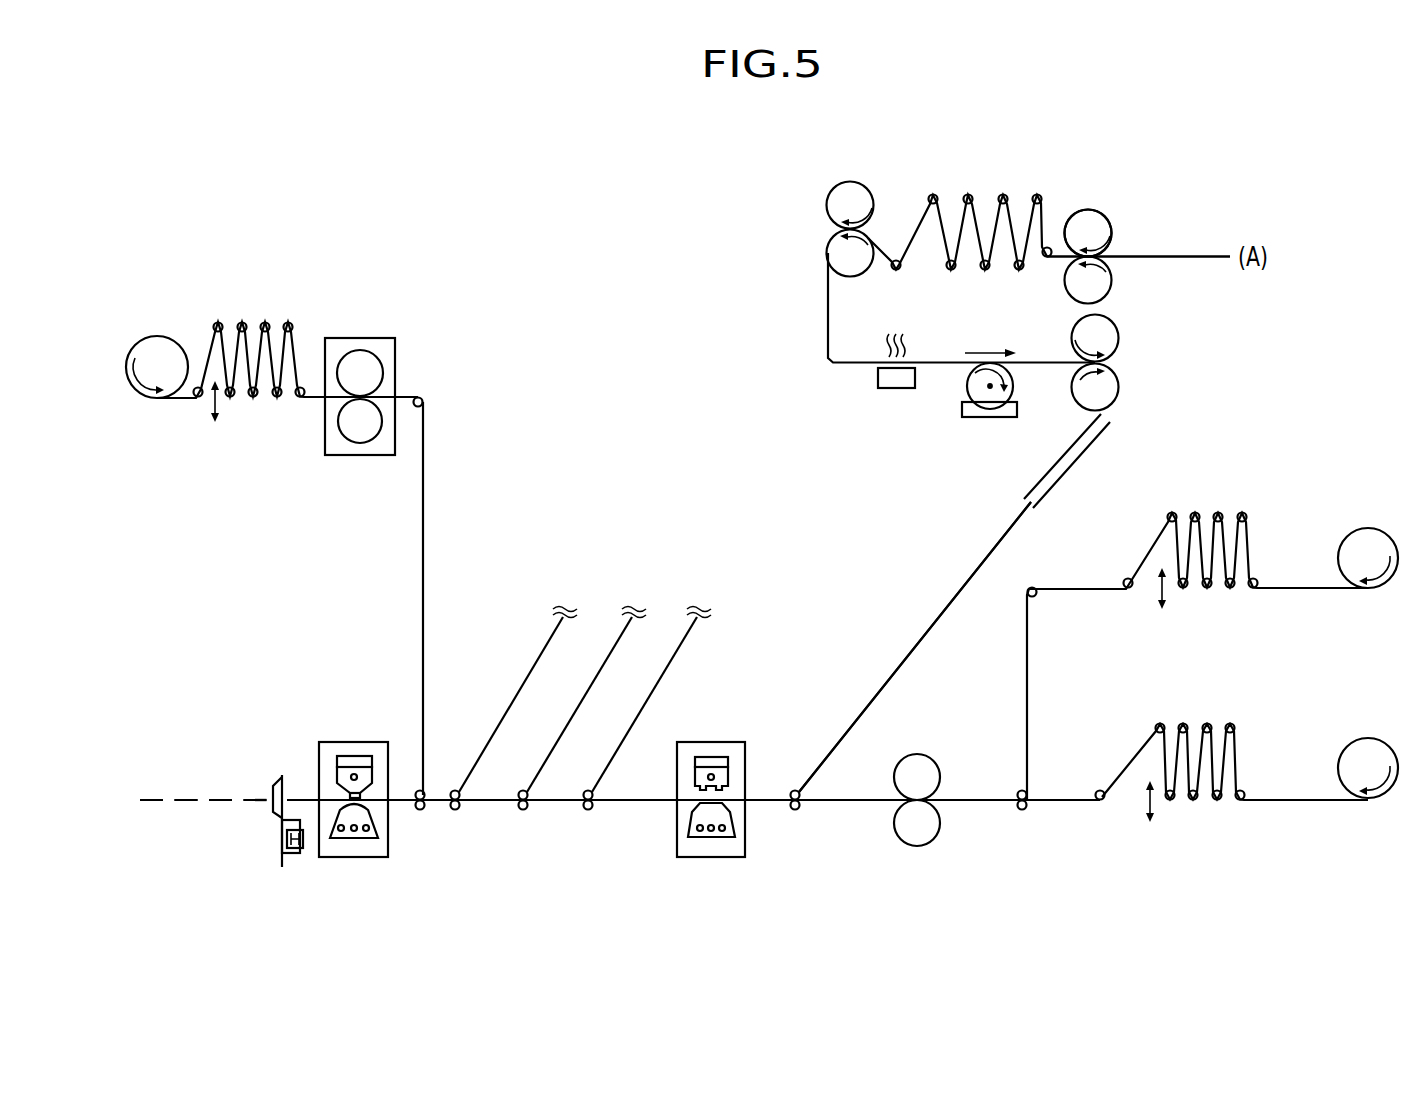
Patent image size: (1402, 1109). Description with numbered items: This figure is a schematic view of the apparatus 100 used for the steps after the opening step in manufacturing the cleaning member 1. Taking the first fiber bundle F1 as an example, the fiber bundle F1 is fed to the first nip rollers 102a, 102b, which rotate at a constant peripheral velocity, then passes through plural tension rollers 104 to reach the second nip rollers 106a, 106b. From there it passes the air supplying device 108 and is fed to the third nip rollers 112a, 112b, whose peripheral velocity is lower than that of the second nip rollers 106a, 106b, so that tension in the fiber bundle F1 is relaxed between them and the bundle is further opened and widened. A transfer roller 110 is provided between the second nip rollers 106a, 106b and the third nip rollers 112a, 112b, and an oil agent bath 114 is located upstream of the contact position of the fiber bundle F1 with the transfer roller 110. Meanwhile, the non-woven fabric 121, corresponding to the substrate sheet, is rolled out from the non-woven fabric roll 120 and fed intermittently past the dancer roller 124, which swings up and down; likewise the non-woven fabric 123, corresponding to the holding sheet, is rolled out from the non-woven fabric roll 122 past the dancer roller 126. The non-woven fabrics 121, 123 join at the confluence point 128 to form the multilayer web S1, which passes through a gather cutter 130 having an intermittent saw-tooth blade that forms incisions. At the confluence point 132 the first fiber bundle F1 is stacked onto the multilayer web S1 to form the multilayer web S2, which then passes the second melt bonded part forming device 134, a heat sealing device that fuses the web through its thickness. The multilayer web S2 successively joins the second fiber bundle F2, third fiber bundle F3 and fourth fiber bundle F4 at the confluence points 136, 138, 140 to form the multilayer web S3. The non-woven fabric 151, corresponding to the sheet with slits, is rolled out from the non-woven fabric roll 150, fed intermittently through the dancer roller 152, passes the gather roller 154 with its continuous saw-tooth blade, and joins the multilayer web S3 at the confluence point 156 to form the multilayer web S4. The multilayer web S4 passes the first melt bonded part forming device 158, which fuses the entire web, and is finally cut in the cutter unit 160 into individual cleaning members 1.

The cleaning member 1 is at (185, 800).
The apparatus 100 is at (1262, 175).
The first nip roller 102a is at (1085, 225).
The first nip roller 102b is at (1111, 286).
The tension rollers 104 is at (1003, 194).
The second nip roller 106a is at (852, 190).
The second nip roller 106b is at (850, 270).
The air supplying device 108 is at (878, 382).
The transfer roller 110 is at (968, 390).
The third nip roller 112a is at (1117, 333).
The third nip roller 112b is at (1117, 385).
The oil agent bath 114 is at (978, 418).
The non-woven fabric roll 120 is at (1368, 758).
The non-woven fabric 121 is at (1280, 799).
The non-woven fabric roll 122 is at (1368, 548).
The non-woven fabric 123 is at (1290, 587).
The dancer roller 124 is at (1200, 705).
The dancer roller 126 is at (1200, 493).
The confluence point 128 is at (1045, 785).
The gather cutter 130 is at (915, 765).
The confluence point 132 is at (803, 828).
The second melt bonded part forming device 134 is at (710, 742).
The confluence point 136 is at (605, 828).
The confluence point 138 is at (540, 828).
The confluence point 140 is at (472, 828).
The non-woven fabric roll 150 is at (158, 352).
The non-woven fabric 151 is at (200, 398).
The dancer roller 152 is at (275, 300).
The gather roller 154 is at (365, 320).
The confluence point 156 is at (412, 830).
The first melt bonded part forming device 158 is at (340, 742).
The cutter unit 160 is at (296, 853).
The first fiber bundle F1 is at (1153, 255).
The second fiber bundle F2 is at (692, 633).
The third fiber bundle F3 is at (627, 633).
The fourth fiber bundle F4 is at (558, 633).
The multilayer web S1 is at (985, 799).
The multilayer web S2 is at (770, 798).
The multilayer web S3 is at (432, 808).
The multilayer web S4 is at (405, 797).